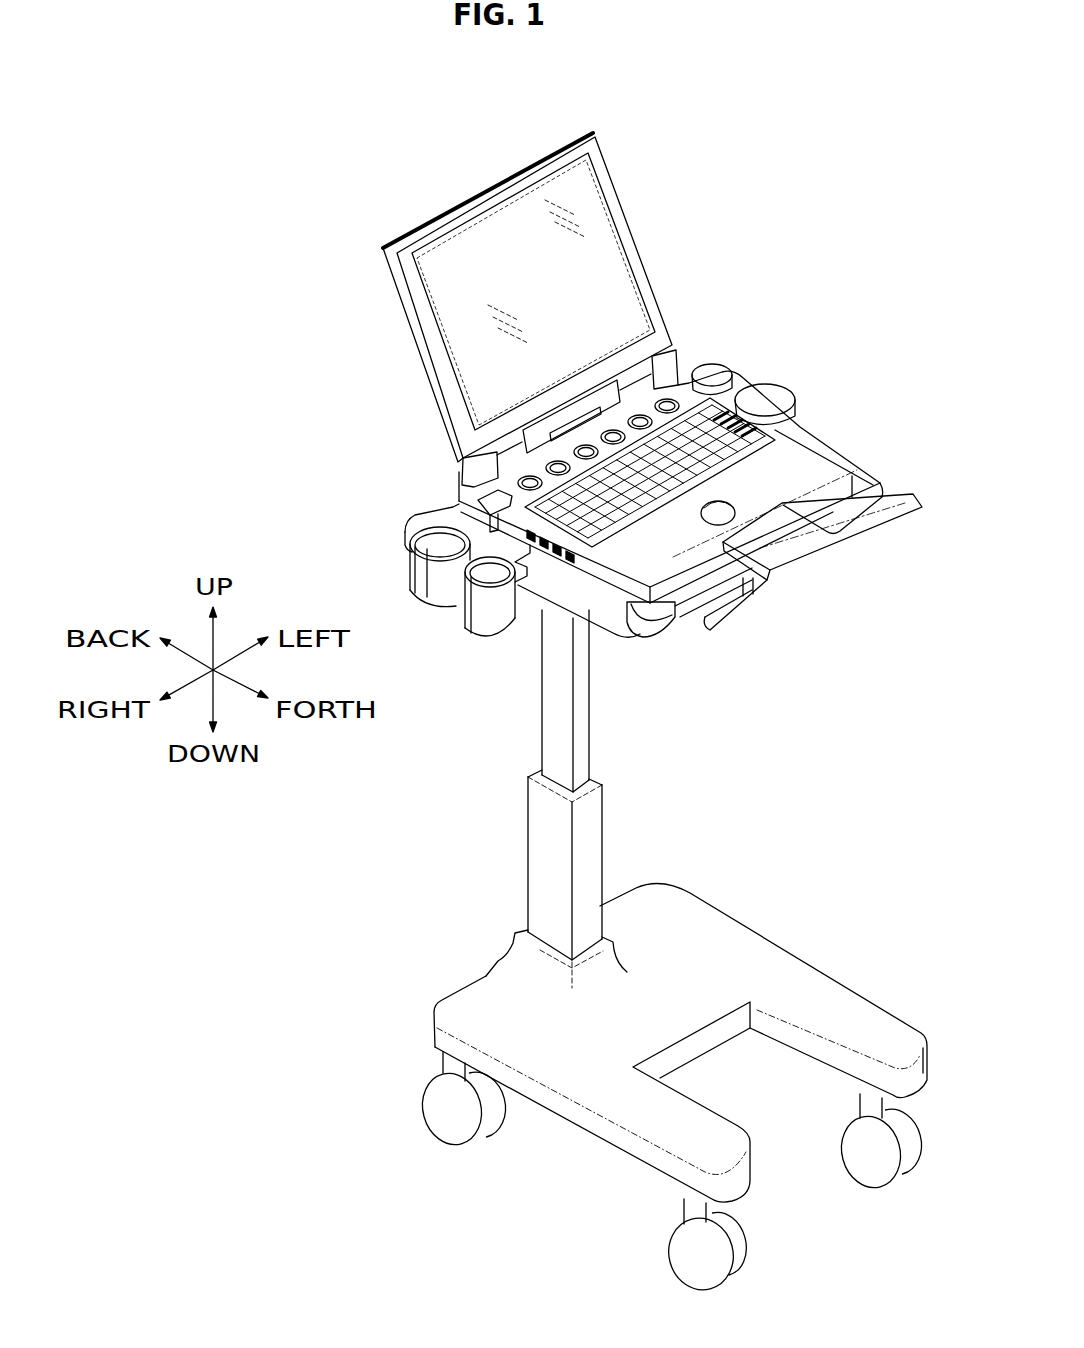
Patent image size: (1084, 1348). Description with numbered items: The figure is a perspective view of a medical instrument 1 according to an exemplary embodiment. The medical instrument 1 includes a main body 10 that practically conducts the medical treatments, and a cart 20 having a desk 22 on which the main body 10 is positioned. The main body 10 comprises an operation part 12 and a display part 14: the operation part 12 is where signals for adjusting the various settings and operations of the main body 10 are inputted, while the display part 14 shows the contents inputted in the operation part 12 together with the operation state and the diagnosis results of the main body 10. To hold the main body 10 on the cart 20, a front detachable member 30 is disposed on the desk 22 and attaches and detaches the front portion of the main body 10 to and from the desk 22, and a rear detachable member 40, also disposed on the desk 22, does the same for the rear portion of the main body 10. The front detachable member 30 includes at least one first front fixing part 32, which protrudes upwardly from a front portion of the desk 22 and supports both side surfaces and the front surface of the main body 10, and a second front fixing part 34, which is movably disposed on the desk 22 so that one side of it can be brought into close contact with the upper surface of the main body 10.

The medical instrument 1 is at (392, 174).
The main body 10 is at (672, 307).
The operation part 12 is at (783, 465).
The display part 14 is at (597, 213).
The cart 20 is at (612, 834).
The desk 22 is at (547, 608).
The front detachable member 30 is at (867, 703).
The first front fixing part 32 is at (658, 622).
The second front fixing part 34 is at (775, 583).
The rear detachable member 40 is at (477, 495).